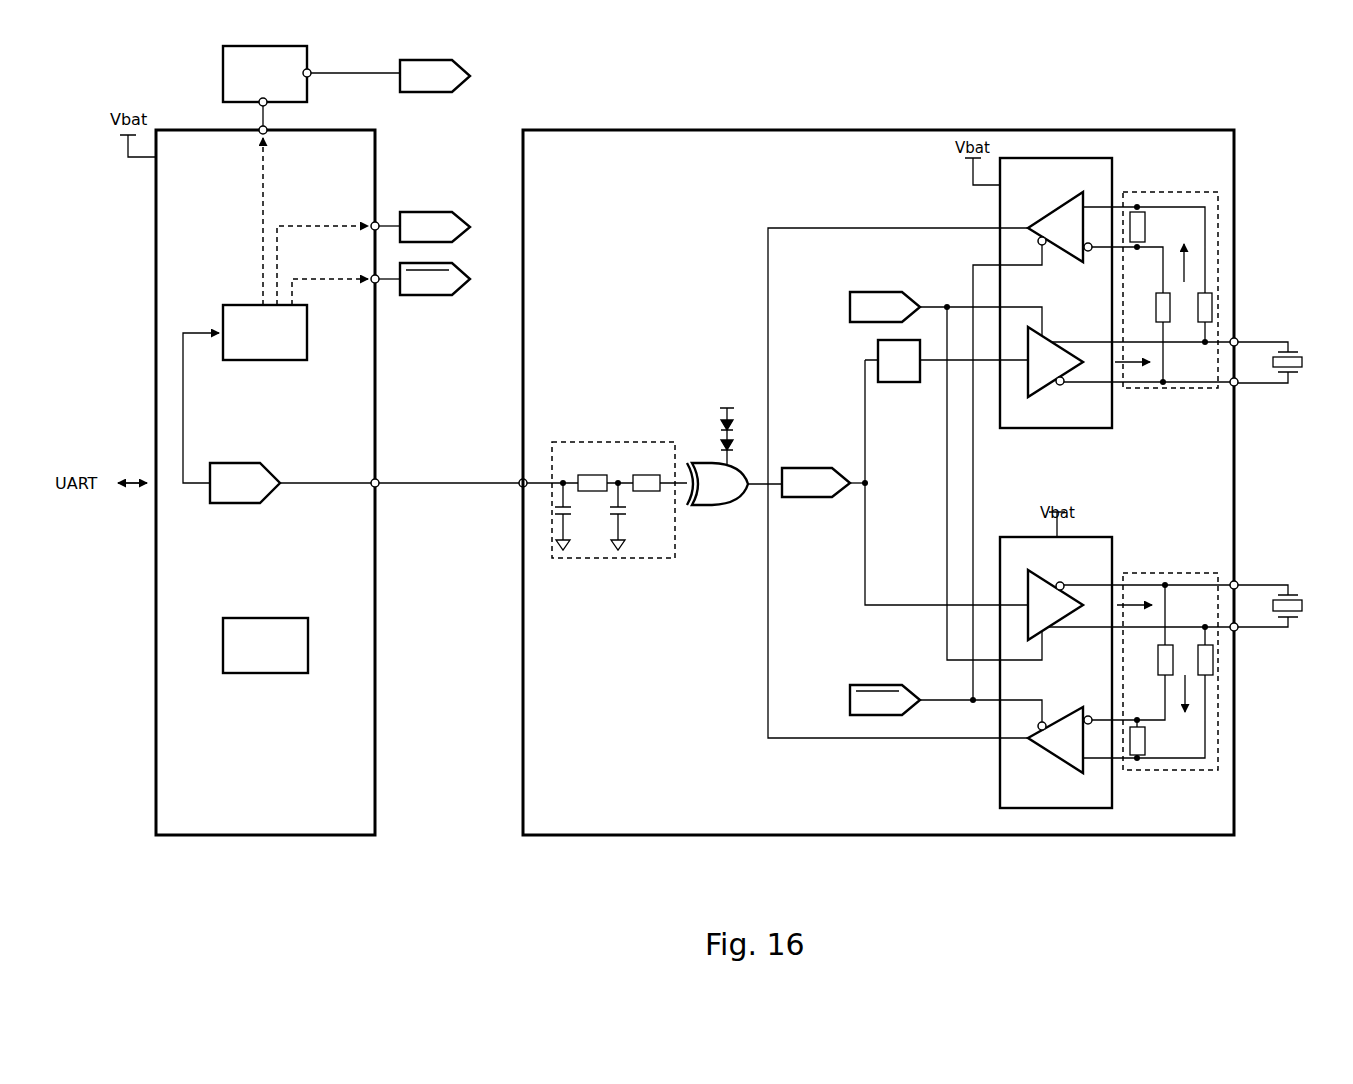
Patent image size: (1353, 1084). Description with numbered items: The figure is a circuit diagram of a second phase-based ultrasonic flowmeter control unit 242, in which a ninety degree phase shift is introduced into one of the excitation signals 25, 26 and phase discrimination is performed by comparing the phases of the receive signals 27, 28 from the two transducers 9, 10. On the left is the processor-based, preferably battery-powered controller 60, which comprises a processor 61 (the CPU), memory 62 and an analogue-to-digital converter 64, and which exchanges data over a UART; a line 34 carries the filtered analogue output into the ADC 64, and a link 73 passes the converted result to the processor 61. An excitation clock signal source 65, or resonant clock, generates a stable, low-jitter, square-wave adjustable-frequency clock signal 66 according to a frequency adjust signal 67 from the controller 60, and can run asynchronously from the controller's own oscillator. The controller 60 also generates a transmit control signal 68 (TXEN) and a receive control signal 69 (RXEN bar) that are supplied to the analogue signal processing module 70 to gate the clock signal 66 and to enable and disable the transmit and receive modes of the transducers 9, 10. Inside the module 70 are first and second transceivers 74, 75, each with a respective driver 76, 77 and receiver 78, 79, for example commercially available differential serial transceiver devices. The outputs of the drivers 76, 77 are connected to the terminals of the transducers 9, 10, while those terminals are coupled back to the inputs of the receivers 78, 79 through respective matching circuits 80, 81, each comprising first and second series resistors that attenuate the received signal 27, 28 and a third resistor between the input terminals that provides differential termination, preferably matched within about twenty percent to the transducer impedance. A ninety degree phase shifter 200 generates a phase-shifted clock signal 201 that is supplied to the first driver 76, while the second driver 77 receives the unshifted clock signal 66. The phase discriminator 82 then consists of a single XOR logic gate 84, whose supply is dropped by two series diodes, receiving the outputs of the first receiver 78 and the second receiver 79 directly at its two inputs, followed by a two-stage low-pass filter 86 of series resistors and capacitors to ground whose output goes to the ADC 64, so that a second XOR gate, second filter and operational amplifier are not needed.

The transducer 9 is at (1306, 336).
The transducer 10 is at (1307, 583).
The second phase-based ultrasonic flowmeter control unit 242 is at (1252, 890).
The excitation signal 25 is at (1135, 367).
The excitation signal 26 is at (1135, 602).
The received signal 27 is at (1178, 270).
The received signal 28 is at (1180, 692).
The signal line 34 is at (455, 486).
The controller 60 is at (183, 836).
The processor 61 is at (263, 362).
The memory 62 is at (263, 675).
The analogue-to-digital converter 64 is at (236, 505).
The excitation clock signal source 65 is at (223, 75).
The adjustable-frequency clock signal 66 is at (428, 95).
The frequency adjust signal 67 is at (258, 118).
The transmit control signal 68 is at (424, 211).
The receive control signal 69 is at (426, 296).
The analogue signal processing module 70 is at (563, 836).
The ADC output to CPU 73 is at (197, 487).
The first transceiver 74 is at (1012, 430).
The second transceiver 75 is at (1012, 537).
The first driver 76 is at (1043, 389).
The second driver 77 is at (1047, 575).
The first receiver 78 is at (1066, 200).
The second receiver 79 is at (1068, 760).
The matching circuit 80 is at (1183, 390).
The matching circuit 81 is at (1183, 772).
The first phase discriminator 82 is at (642, 481).
The XOR logic gate 84 is at (727, 507).
The low-pass filter 86 is at (660, 560).
The 90° phase shifter 200 is at (896, 384).
The 90° phase-shifted clock signal 201 is at (993, 364).